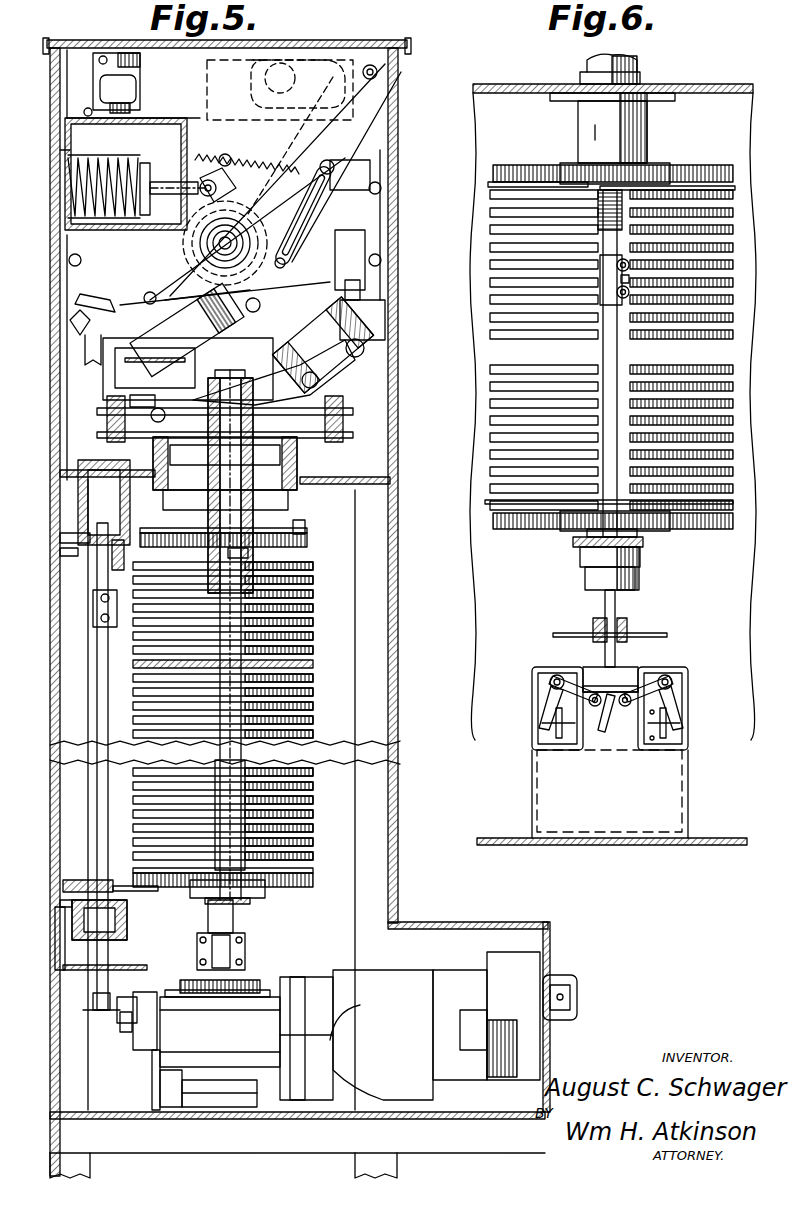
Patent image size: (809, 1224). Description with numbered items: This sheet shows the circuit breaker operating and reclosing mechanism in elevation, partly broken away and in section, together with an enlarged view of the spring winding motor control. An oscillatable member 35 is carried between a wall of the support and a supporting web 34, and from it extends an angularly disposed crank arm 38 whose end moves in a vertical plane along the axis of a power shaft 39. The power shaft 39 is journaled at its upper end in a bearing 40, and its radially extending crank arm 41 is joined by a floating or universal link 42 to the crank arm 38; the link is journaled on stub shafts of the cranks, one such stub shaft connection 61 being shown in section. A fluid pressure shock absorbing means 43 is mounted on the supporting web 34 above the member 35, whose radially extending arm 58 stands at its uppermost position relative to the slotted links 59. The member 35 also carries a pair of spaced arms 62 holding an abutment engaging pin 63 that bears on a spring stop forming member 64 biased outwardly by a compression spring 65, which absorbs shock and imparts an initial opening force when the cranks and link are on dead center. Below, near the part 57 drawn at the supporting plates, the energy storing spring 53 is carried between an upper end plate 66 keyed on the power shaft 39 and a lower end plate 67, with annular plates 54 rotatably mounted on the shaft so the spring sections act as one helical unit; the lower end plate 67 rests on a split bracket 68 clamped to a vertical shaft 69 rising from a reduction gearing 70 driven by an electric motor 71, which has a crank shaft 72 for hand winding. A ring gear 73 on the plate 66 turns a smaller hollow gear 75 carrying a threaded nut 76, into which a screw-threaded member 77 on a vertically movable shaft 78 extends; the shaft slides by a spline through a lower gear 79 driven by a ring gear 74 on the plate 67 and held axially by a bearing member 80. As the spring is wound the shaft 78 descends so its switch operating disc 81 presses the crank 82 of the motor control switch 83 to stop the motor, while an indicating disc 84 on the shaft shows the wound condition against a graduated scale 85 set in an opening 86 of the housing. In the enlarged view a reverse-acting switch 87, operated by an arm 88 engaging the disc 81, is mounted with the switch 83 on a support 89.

In FIG. 5, the supporting web 34 is at (362, 120).
In FIG. 5, the oscillatable member 35 is at (205, 252).
In FIG. 5, the crank arm 38 is at (210, 303).
In FIG. 5, the power shaft 39 is at (232, 523).
In FIG. 6, the power shaft 39 is at (587, 64).
In FIG. 5, the bearing 40 is at (185, 488).
In FIG. 5, the crank arm 41 is at (305, 399).
In FIG. 5, the floating or universal link 42 is at (250, 360).
In FIG. 5, the fluid pressure check or shock absorbing means 43 is at (192, 77).
In FIG. 5, the energy storing spring 53 is at (313, 595).
In FIG. 6, the energy storing spring 53 is at (735, 262).
In FIG. 5, the annular plates 54 is at (313, 640).
In FIG. 5, the plate 57 is at (284, 435).
In FIG. 5, the radially extending arm 58 is at (284, 217).
In FIG. 5, the slotted links 59 is at (300, 258).
In FIG. 5, the stub shaft connection 61 is at (372, 340).
In FIG. 5, the spaced arms 62 is at (216, 190).
In FIG. 5, the abutment engaging pin 63 is at (210, 182).
In FIG. 5, the spring stop forming member 64 is at (165, 182).
In FIG. 5, the compression spring 65 is at (128, 154).
In FIG. 5, the end plate 66 is at (303, 542).
In FIG. 6, the end plate 66 is at (735, 191).
In FIG. 5, the lower end plate 67 is at (278, 887).
In FIG. 5, the split bracket 68 is at (233, 920).
In FIG. 5, the vertical shaft 69 is at (220, 950).
In FIG. 5, the reduction gearing 70 is at (240, 1045).
In FIG. 5, the electric motor 71 is at (405, 980).
In FIG. 5, the crank shaft 72 is at (570, 992).
In FIG. 5, the ring gear 73 is at (304, 543).
In FIG. 6, the ring gear 73 is at (752, 156).
In FIG. 5, the ring gear 74 is at (300, 893).
In FIG. 6, the ring gear 74 is at (510, 530).
In FIG. 5, the gear 75 is at (60, 537).
In FIG. 6, the gear 75 is at (568, 165).
In FIG. 5, the threaded nut 76 is at (60, 552).
In FIG. 5, the screw-threaded member 77 is at (112, 565).
In FIG. 5, the vertically movable shaft 78 is at (97, 660).
In FIG. 6, the vertically movable shaft 78 is at (605, 603).
In FIG. 5, the lower gear 79 is at (63, 886).
In FIG. 6, the lower gear 79 is at (646, 531).
In FIG. 5, the bearing member 80 is at (78, 508).
In FIG. 6, the bearing member 80 is at (595, 570).
In FIG. 5, the switch operating disc 81 is at (100, 1011).
In FIG. 6, the switch operating disc 81 is at (608, 714).
In FIG. 5, the crank 82 is at (128, 1030).
In FIG. 6, the crank 82 is at (646, 670).
In FIG. 5, the motor control switch 83 is at (146, 1026).
In FIG. 6, the motor control switch 83 is at (688, 710).
In FIG. 5, the indicating disc 84 is at (82, 975).
In FIG. 6, the indicating disc 84 is at (643, 634).
In FIG. 5, the graduated scale 85 is at (55, 948).
In FIG. 5, the opening 86 is at (60, 970).
In FIG. 6, the switch 87 is at (532, 737).
In FIG. 6, the arm 88 is at (579, 668).
In FIG. 5, the support 89 is at (160, 1077).
In FIG. 6, the support 89 is at (550, 782).